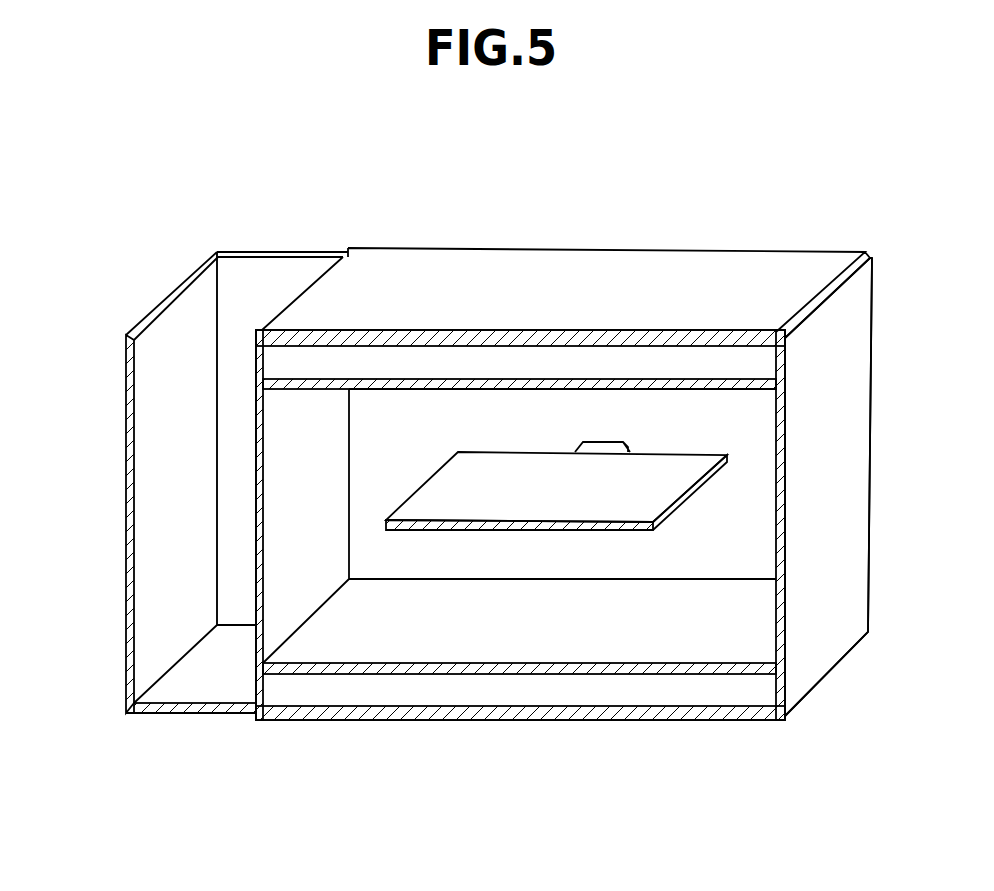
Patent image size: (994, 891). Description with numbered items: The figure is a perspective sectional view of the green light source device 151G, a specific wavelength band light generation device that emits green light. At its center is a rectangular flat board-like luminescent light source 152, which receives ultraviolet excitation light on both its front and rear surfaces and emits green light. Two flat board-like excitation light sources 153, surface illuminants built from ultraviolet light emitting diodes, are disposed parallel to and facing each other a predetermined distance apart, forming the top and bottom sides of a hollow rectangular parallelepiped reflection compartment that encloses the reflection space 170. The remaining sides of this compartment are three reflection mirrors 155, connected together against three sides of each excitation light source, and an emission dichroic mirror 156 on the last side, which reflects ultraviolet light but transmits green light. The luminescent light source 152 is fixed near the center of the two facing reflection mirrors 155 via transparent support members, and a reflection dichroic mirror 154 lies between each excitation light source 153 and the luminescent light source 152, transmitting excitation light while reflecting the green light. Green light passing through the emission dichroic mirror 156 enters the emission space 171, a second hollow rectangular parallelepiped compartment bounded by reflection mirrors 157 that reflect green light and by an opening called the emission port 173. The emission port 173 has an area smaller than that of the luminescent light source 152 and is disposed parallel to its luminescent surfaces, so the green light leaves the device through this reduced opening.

The green light source device 151G is at (443, 736).
The luminescent light source 152 is at (670, 478).
The excitation light source 153 is at (597, 292).
The reflection dichroic mirror 154 is at (293, 367).
The reflection mirror 155 is at (815, 633).
The emission dichroic mirror 156 is at (317, 573).
The reflection mirror 157 is at (160, 347).
The reflection space 170 is at (370, 435).
The emission space 171 is at (237, 487).
The emission port 173 is at (240, 300).